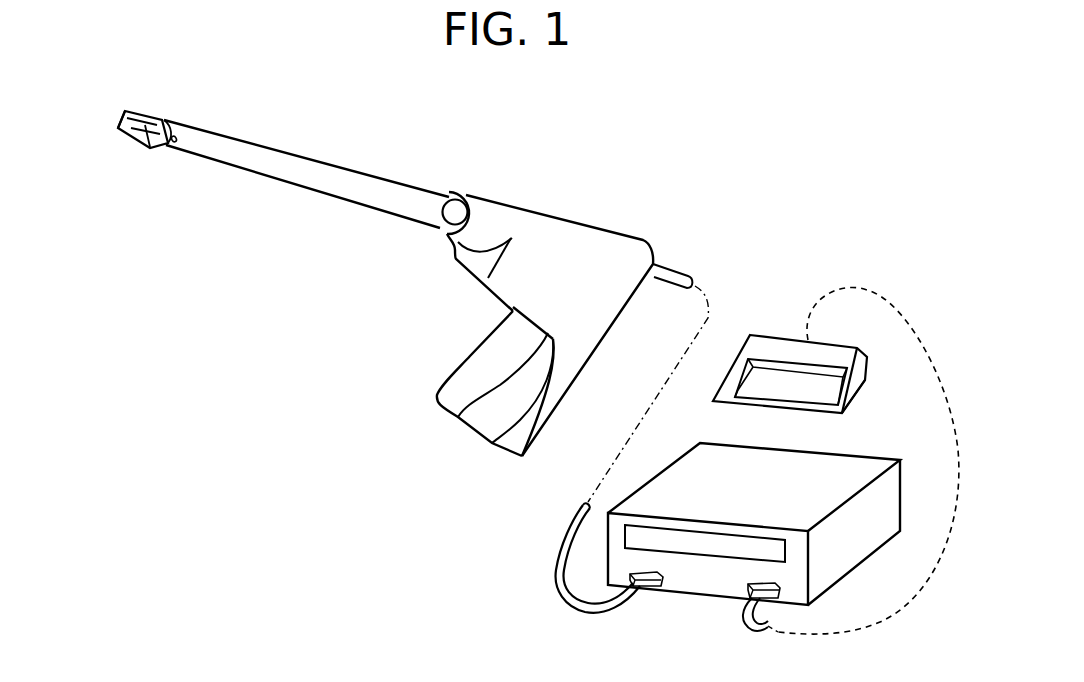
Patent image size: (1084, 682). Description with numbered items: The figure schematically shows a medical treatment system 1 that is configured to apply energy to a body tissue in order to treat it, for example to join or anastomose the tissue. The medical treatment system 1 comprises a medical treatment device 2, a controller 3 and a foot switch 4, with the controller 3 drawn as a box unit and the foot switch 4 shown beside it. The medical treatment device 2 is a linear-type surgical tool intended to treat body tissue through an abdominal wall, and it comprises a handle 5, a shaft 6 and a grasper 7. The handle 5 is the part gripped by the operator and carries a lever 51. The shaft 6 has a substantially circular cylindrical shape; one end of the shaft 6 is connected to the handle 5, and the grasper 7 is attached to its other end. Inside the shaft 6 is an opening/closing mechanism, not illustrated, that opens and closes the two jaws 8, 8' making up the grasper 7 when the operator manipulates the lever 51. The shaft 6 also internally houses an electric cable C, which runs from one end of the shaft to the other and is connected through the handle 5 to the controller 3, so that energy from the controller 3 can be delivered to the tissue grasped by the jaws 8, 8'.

The medical treatment system 1 is at (733, 186).
The medical treatment device 2 is at (428, 199).
The controller 3 is at (853, 462).
The foot switch 4 is at (837, 340).
The handle 5 is at (602, 247).
The lever 51 is at (450, 400).
The shaft 6 is at (313, 163).
The grasper 7 is at (183, 206).
The jaw 8 is at (157, 165).
The jaw 8' is at (127, 162).
The electric cable C is at (565, 594).